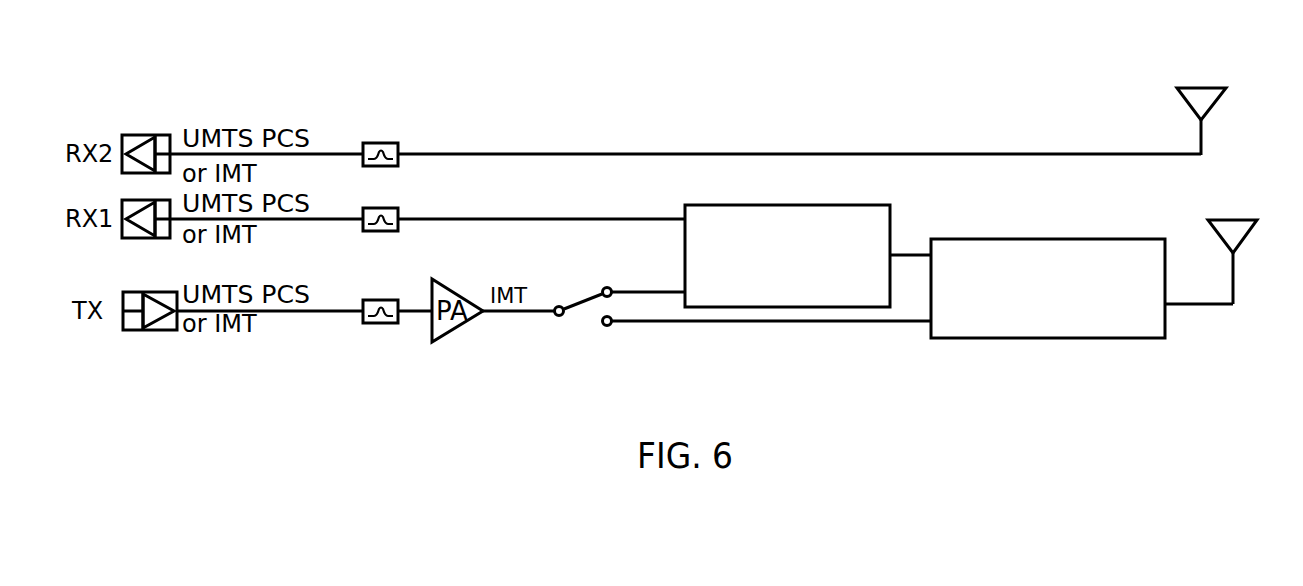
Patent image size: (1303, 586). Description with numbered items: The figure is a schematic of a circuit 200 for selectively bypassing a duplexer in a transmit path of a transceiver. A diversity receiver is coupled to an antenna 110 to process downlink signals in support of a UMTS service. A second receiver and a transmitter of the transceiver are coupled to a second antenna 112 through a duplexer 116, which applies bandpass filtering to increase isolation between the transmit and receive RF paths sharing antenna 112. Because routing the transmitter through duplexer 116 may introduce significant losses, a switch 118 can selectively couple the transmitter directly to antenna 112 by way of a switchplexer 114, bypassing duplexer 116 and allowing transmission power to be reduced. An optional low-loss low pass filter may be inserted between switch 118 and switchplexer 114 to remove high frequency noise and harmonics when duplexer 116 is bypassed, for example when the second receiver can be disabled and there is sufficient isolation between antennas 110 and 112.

The circuit 200 is at (958, 45).
The antenna 110 is at (1195, 88).
The antenna 112 is at (1233, 220).
The switchplexer 114 is at (1088, 239).
The duplexer 116 is at (827, 205).
The switch 118 is at (582, 306).